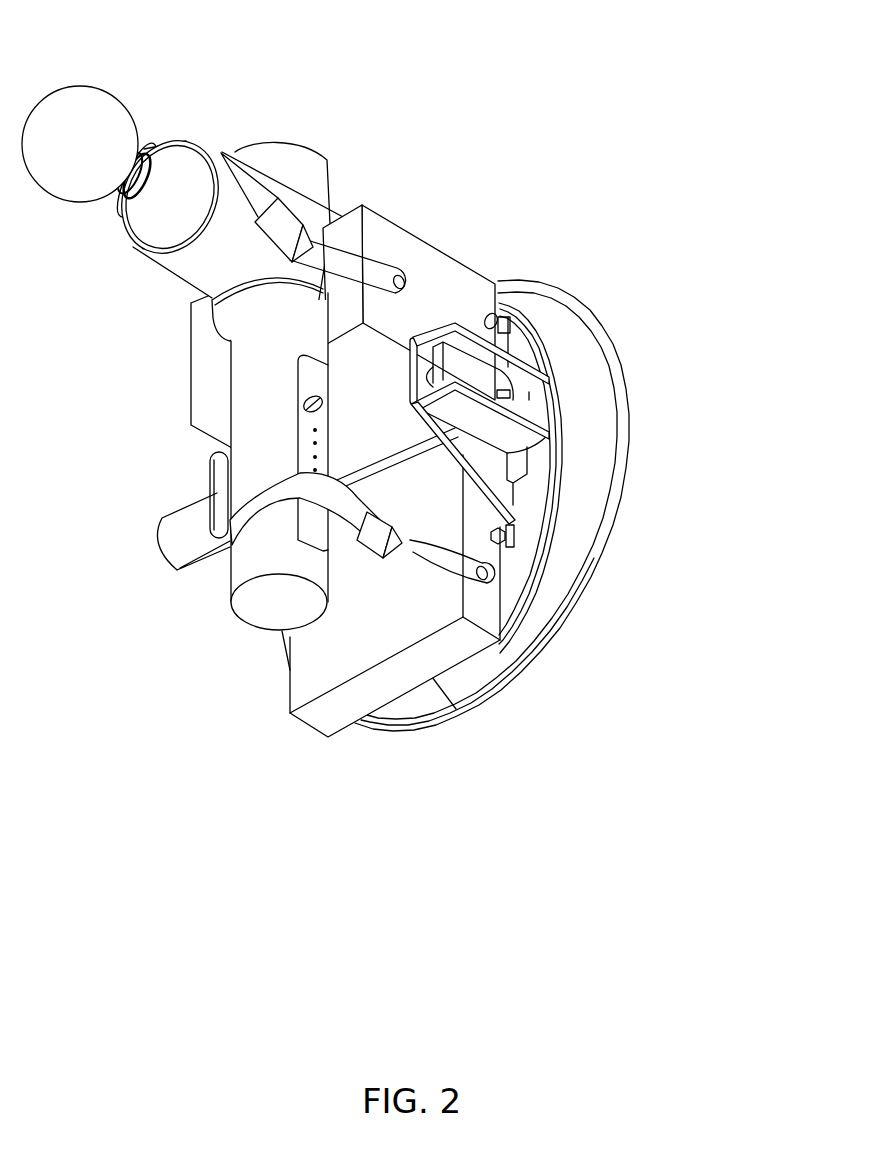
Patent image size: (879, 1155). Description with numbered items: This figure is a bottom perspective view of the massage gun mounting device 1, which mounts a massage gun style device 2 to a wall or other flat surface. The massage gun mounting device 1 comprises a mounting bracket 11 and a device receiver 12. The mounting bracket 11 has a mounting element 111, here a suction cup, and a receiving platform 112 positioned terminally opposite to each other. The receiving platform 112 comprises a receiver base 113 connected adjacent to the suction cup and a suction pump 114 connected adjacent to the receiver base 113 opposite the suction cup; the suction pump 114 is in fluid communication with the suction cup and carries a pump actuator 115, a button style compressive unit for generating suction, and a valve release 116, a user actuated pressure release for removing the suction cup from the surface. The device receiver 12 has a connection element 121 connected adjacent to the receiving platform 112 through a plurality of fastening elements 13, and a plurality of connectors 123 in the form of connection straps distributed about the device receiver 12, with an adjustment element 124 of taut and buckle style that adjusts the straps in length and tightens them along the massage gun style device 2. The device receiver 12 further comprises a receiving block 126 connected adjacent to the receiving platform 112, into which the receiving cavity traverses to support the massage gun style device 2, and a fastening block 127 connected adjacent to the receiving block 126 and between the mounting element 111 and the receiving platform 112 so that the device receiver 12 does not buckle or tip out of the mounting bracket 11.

The massage gun mounting device 1 is at (374, 386).
The massage gun style device 2 is at (99, 88).
The mounting bracket 11 is at (541, 476).
The device receiver 12 is at (307, 390).
The fastening elements 13 is at (555, 409).
The mounting element 111 is at (621, 367).
The receiving platform 112 is at (538, 483).
The receiver base 113 is at (514, 564).
The suction pump 114 is at (434, 452).
The pump actuator 115 is at (177, 569).
The valve release 116 is at (487, 386).
The connection element 121 is at (478, 326).
The connectors 123 is at (398, 238).
The adjustment element 124 is at (269, 237).
The receiving block 126 is at (394, 220).
The fastening block 127 is at (301, 723).